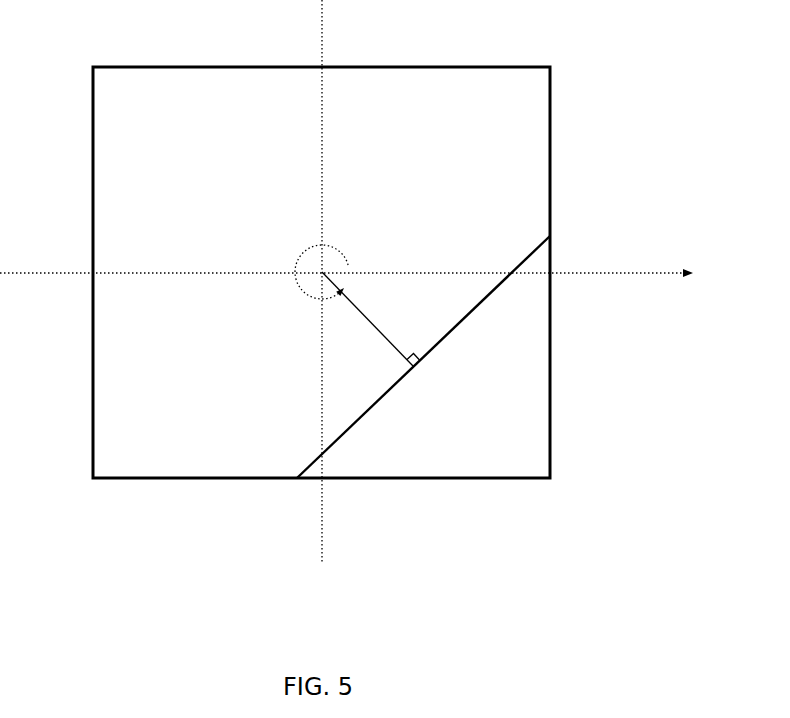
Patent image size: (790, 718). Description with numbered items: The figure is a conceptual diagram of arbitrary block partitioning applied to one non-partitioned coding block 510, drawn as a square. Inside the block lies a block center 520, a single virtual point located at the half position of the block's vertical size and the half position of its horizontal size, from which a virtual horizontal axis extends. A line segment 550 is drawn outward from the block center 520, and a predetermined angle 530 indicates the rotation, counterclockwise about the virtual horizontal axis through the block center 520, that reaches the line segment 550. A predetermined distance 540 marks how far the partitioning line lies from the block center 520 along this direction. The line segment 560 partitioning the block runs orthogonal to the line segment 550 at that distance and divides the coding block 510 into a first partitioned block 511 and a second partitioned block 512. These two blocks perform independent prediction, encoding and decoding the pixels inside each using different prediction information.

The non-partitioned coding block 510 is at (93, 66).
The first partitioned block 511 is at (217, 180).
The second partitioned block 512 is at (467, 414).
The block center 520 is at (342, 253).
The predetermined angle 530 is at (297, 225).
The predetermined distance 540 is at (397, 298).
The line segment 550 is at (353, 317).
The line segment partitioning the block 560 is at (300, 472).